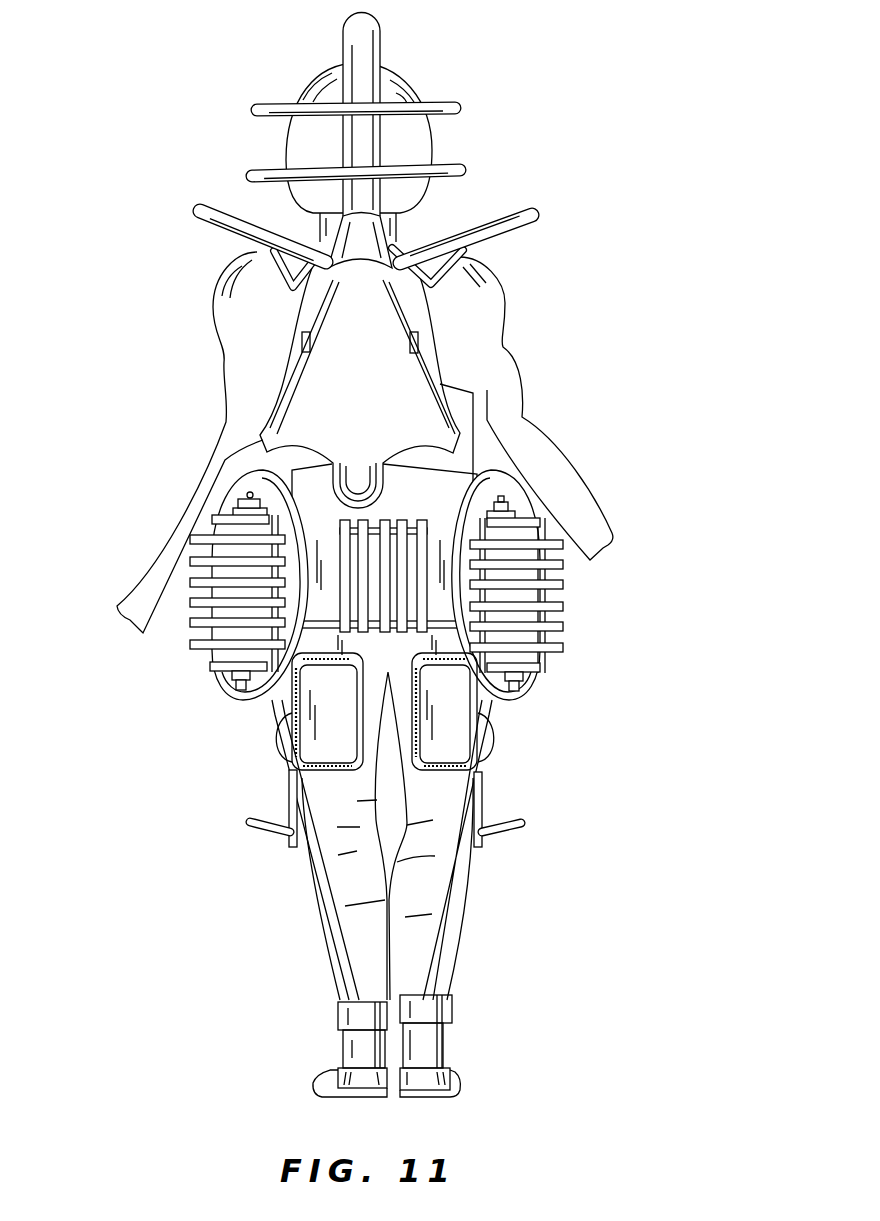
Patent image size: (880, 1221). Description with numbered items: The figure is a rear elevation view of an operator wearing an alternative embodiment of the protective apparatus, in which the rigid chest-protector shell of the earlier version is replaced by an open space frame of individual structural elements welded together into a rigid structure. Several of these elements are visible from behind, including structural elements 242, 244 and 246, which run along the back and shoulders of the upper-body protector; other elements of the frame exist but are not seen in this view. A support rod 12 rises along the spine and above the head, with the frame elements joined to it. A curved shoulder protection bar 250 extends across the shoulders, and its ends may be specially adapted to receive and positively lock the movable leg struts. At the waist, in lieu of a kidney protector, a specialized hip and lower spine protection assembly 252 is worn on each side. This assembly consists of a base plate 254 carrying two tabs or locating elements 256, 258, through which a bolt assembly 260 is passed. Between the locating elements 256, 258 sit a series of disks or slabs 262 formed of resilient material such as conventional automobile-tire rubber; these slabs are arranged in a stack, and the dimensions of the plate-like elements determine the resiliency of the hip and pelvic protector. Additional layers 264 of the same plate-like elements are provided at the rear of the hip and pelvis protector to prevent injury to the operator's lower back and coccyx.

The support rod 12 is at (380, 40).
The structural element 242 is at (440, 333).
The structural element 244 is at (458, 258).
The structural element 246 is at (457, 393).
The curved shoulder protection bar 250 is at (512, 206).
The hip and lower spine protection assembly 252 is at (144, 657).
The base plate 254 is at (213, 673).
The locating element 256 is at (532, 677).
The locating element 258 is at (510, 512).
The bolt assembly 260 is at (232, 697).
The disks or slabs 262 is at (560, 647).
The additional layers 264 is at (414, 488).